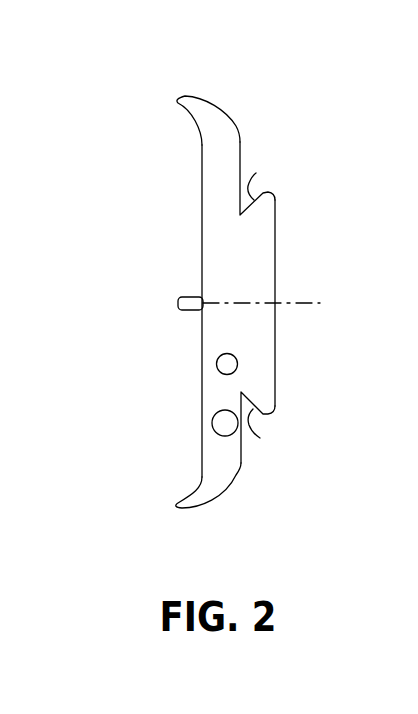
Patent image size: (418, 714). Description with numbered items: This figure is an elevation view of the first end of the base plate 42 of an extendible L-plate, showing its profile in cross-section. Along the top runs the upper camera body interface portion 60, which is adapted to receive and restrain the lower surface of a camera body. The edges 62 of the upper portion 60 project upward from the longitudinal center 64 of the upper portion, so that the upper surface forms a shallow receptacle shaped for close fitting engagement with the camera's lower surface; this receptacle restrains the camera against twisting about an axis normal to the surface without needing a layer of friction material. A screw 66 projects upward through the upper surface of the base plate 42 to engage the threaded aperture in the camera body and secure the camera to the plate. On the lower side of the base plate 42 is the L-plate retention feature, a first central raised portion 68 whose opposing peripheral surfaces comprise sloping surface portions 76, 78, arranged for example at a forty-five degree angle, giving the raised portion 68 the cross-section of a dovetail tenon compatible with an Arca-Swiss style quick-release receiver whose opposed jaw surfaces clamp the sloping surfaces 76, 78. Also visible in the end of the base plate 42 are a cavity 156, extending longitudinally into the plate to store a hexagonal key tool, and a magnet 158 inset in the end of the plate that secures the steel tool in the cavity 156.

The base plate 42 is at (292, 503).
The upper camera body interface portion 60 is at (202, 238).
The edges 62 is at (190, 97).
The longitudinal center 64 is at (308, 302).
The screw 66 is at (183, 297).
The first central raised portion 68 is at (277, 347).
The sloping surface portion 76 is at (256, 173).
The sloping surface portion 78 is at (260, 438).
The cavity 156 is at (212, 422).
The magnet 158 is at (217, 364).